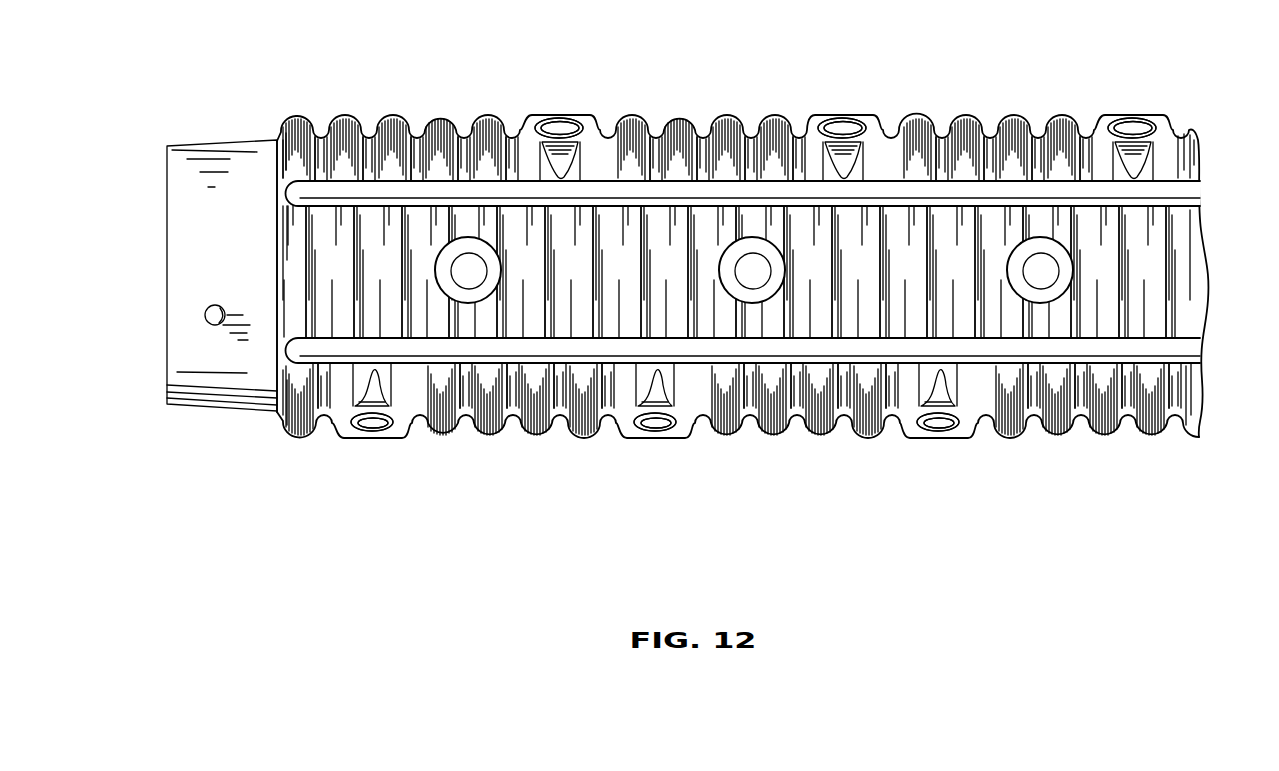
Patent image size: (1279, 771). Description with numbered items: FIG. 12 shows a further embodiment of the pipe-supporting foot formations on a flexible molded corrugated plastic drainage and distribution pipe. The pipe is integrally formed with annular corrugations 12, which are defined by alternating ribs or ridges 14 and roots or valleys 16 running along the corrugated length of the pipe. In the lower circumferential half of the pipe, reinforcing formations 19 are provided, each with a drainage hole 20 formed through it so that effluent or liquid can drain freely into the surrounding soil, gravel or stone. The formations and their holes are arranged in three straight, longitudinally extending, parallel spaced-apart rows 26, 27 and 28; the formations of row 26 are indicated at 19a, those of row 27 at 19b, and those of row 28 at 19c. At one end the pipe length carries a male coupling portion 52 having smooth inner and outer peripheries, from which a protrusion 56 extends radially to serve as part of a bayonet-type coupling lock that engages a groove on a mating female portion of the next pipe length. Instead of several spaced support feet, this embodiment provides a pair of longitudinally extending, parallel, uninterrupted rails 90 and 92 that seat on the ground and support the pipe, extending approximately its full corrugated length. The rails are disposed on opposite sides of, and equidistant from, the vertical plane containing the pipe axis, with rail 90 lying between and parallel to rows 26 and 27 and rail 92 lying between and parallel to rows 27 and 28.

The annular corrugations 12 is at (686, 92).
The ribs or ridges 14 is at (347, 117).
The roots or valleys 16 is at (368, 136).
The reinforcing formations 19 is at (530, 117).
The reinforcing formations of row 26 19a is at (595, 130).
The reinforcing formations of row 27 19b is at (493, 290).
The reinforcing formations of row 28 19c is at (687, 412).
The drainage hole 20 is at (552, 125).
The first drainage hole row 26 is at (896, 103).
The second drainage hole row 27 is at (1096, 272).
The third drainage hole row 28 is at (746, 464).
The male coupling portion 52 is at (178, 140).
The protrusion 56 is at (206, 316).
The rail 90 is at (307, 183).
The rail 92 is at (291, 365).